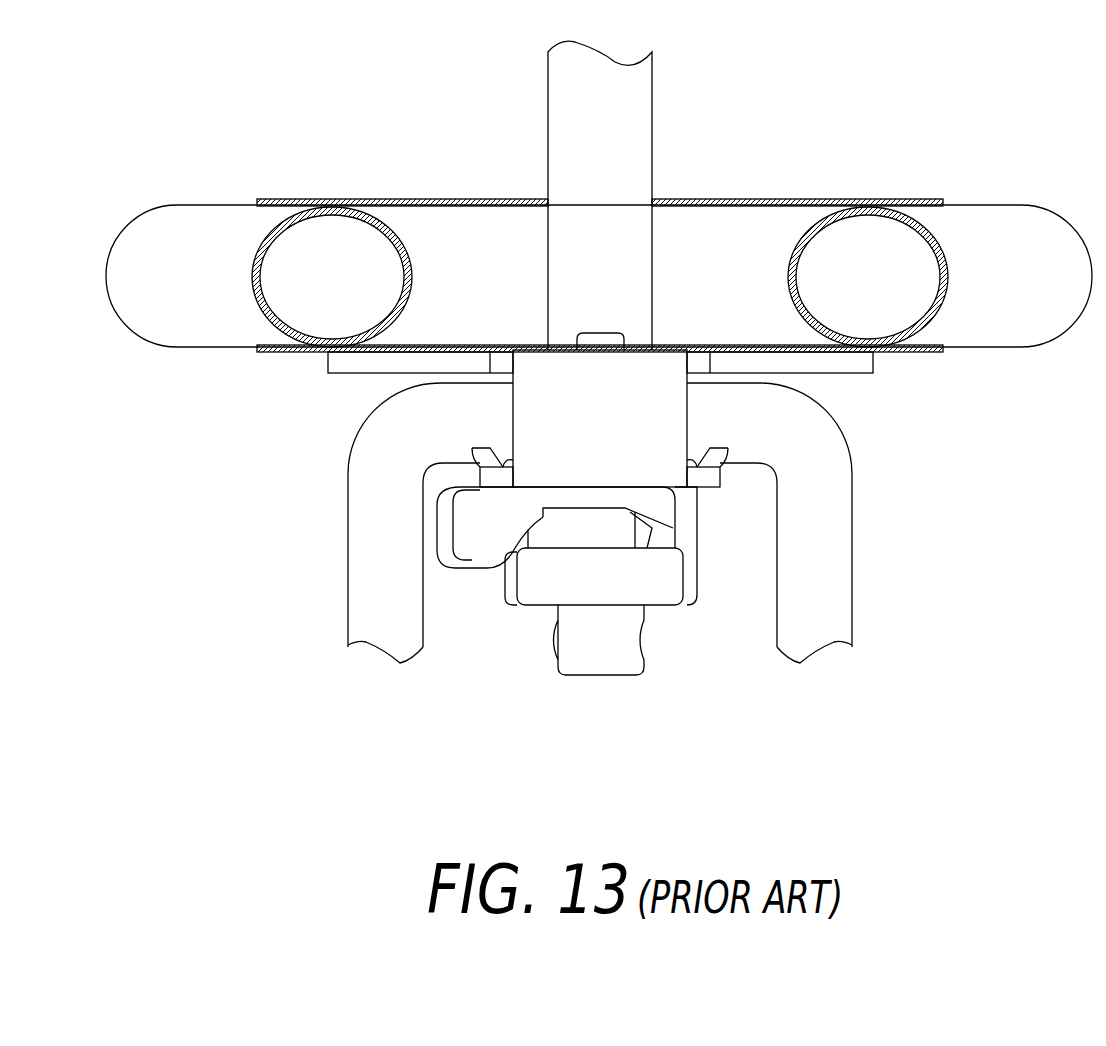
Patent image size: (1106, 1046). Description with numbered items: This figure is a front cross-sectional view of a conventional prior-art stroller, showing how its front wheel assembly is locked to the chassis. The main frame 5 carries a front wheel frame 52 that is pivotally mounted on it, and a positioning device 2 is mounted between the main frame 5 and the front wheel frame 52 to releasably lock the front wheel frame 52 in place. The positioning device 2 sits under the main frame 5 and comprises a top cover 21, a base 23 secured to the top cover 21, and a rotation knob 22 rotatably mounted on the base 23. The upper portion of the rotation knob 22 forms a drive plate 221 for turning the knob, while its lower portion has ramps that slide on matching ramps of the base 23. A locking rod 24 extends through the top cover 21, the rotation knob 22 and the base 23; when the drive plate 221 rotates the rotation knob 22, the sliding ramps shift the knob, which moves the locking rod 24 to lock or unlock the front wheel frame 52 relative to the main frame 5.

The main frame 5 is at (207, 258).
The front wheel frame 52 is at (802, 508).
The positioning device 2 is at (510, 456).
The top cover 21 is at (543, 423).
The rotation knob 22 is at (658, 505).
The drive plate 221 is at (477, 530).
The base 23 is at (543, 592).
The locking rod 24 is at (598, 342).